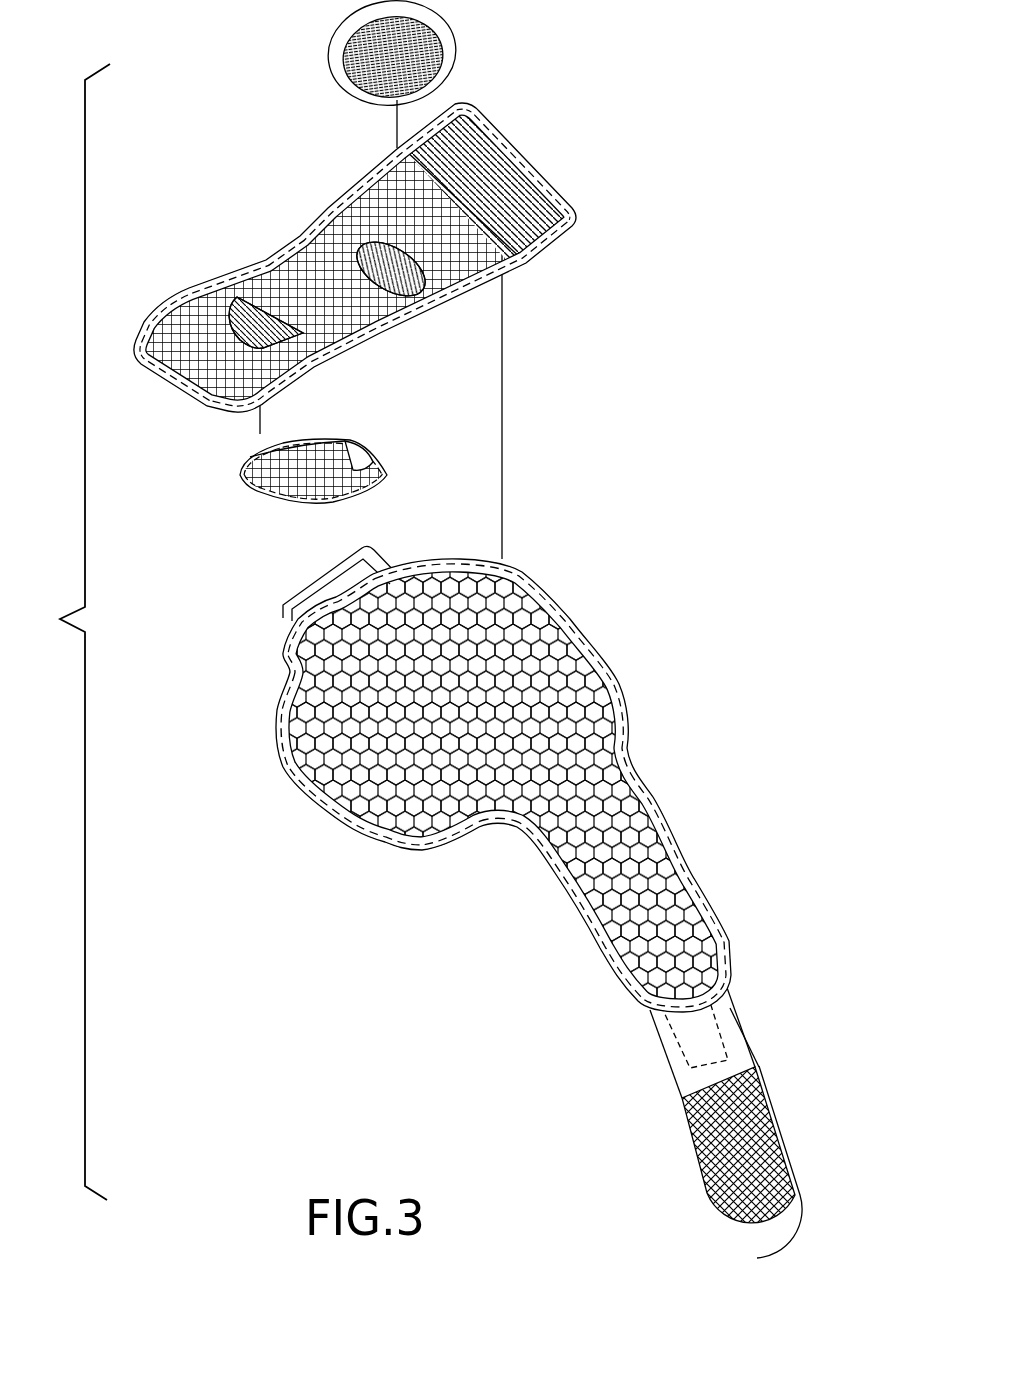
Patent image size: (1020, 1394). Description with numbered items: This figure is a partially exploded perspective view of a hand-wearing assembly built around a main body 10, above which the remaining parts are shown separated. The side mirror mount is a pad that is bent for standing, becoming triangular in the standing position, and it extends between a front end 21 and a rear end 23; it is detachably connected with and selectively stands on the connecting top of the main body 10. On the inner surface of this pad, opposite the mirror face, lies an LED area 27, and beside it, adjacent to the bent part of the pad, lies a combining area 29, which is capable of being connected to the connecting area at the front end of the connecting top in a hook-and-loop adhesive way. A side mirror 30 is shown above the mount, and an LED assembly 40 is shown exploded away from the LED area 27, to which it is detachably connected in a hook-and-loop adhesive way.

The main body 10 is at (683, 700).
The front end 21 is at (367, 260).
The rear end 23 is at (548, 234).
The LED area 27 is at (278, 341).
The combining area 29 is at (411, 291).
The side mirror 30 is at (453, 47).
The LED assembly 40 is at (267, 488).